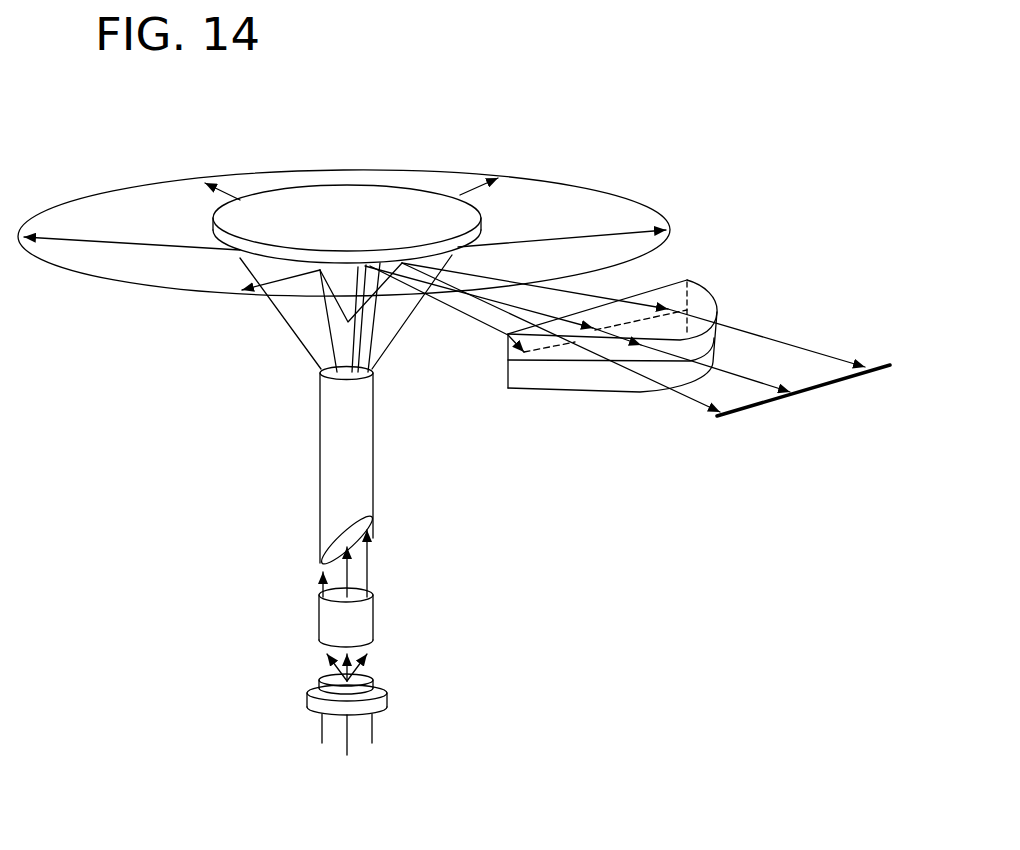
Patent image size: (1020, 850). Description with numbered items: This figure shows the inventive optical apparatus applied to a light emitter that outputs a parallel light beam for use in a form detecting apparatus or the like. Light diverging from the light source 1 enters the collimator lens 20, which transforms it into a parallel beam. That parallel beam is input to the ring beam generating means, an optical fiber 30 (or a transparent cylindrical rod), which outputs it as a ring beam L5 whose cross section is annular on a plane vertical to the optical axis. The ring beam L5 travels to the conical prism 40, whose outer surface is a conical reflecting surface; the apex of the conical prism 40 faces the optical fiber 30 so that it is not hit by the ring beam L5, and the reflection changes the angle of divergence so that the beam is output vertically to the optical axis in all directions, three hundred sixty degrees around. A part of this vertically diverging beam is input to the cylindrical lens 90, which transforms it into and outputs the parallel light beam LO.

The conical prism 40 is at (366, 186).
The ring beam L5 is at (400, 333).
The cylindrical lens 90 is at (700, 284).
The parallel light beam LO is at (765, 406).
The optical fiber 30 is at (376, 492).
The collimator lens 20 is at (376, 626).
The light source 1 is at (388, 697).